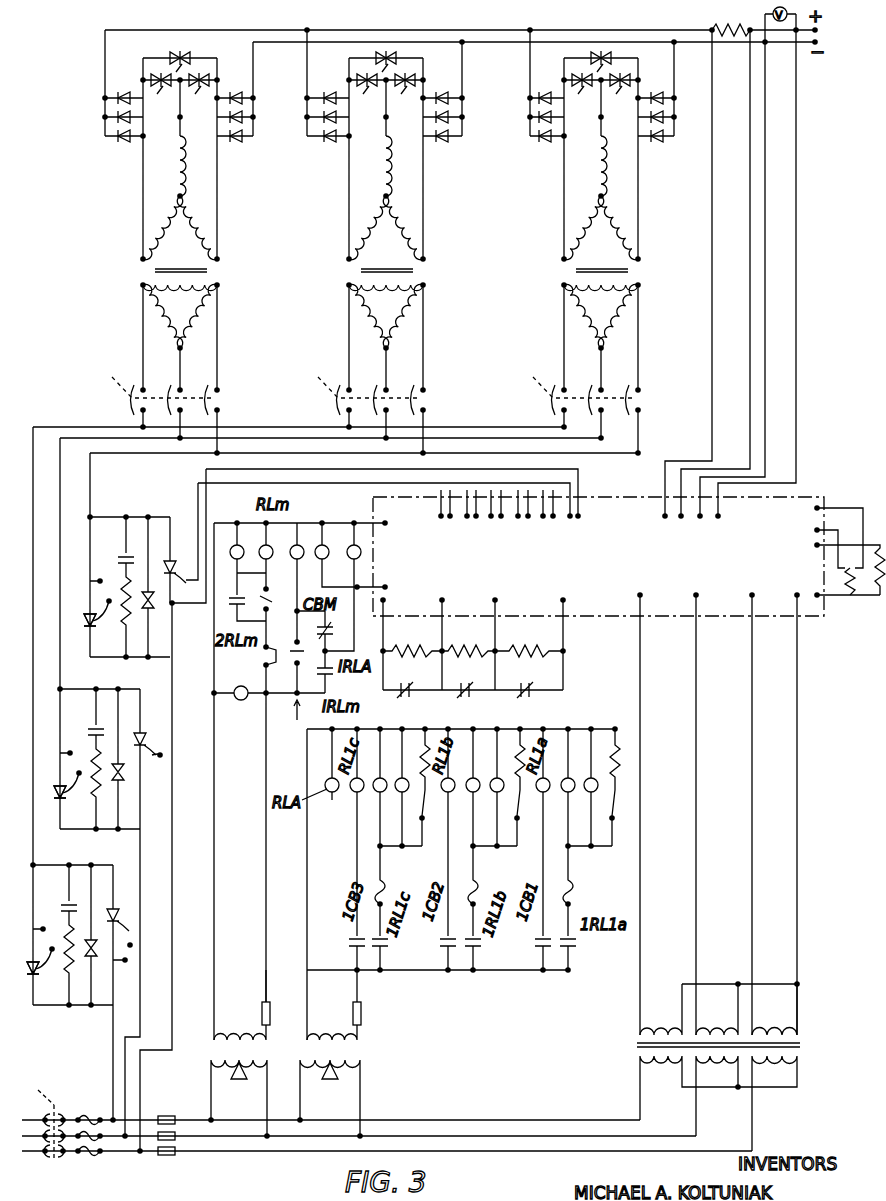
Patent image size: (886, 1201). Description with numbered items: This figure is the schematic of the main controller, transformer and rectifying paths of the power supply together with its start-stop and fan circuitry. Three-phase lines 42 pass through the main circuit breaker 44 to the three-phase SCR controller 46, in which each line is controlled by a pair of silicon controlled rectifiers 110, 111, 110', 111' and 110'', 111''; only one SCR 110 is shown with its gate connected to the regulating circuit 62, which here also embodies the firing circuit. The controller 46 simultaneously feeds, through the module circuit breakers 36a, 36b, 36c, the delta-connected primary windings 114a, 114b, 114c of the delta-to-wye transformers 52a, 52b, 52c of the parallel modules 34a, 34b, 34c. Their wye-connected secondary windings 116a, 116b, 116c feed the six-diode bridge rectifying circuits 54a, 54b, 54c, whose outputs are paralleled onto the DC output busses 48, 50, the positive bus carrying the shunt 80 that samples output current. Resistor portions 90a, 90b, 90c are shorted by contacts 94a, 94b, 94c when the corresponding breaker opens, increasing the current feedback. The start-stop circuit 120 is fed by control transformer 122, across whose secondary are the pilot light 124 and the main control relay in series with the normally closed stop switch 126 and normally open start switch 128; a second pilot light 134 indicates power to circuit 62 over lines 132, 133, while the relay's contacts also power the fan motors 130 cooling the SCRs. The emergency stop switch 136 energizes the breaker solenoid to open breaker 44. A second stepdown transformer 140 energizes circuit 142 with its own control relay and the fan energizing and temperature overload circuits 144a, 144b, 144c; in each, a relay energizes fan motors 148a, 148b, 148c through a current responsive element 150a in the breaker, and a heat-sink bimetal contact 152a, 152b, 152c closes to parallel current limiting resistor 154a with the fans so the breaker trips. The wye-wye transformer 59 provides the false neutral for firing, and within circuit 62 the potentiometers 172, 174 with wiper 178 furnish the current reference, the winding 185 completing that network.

The DC output bus 48 is at (577, 46).
The positive DC output bus 50 is at (664, 40).
The shunt 80 is at (722, 32).
The three-phase diode rectifying circuit 54a is at (652, 140).
The three-phase diode rectifying circuit 54b is at (442, 140).
The three-phase diode rectifying circuit 54c is at (236, 140).
The module 34a is at (555, 234).
The module 34b is at (334, 216).
The module 34c is at (117, 216).
The secondary winding 116a is at (626, 232).
The secondary winding 116b is at (411, 232).
The secondary winding 116c is at (205, 232).
The delta-to-wye transformer 52a is at (643, 275).
The delta-to-wye transformer 52b is at (428, 275).
The delta-to-wye transformer 52c is at (222, 275).
The primary winding 114a is at (621, 328).
The primary winding 114b is at (406, 328).
The primary winding 114c is at (200, 328).
The circuit breaker 36a is at (641, 404).
The circuit breaker 36b is at (426, 404).
The circuit breaker 36c is at (220, 404).
The silicon controlled rectifier 110 is at (145, 811).
The silicon controlled rectifier 111 is at (77, 614).
The silicon controlled rectifier 110' is at (146, 920).
The silicon controlled rectifier 111' is at (49, 785).
The silicon controlled rectifier 110'' is at (86, 992).
The silicon controlled rectifier 111'' is at (50, 982).
The three-phase SCR controller 46 is at (100, 856).
The pilot light 134 is at (228, 533).
The fan motors 130 is at (343, 535).
The start switch 128 is at (270, 600).
The emergency stop switch 136 is at (305, 650).
The stop switch 126 is at (262, 667).
The pilot light 124 is at (240, 700).
The start-stop circuit 120 is at (288, 723).
The input line 133 is at (414, 521).
The input line 132 is at (391, 595).
The voltage-current regulating circuit 62 is at (608, 562).
The potentiometer 174 is at (882, 545).
The wiper 178 is at (832, 586).
The winding 185 is at (872, 600).
The potentiometer 172 is at (832, 600).
The resistor portion 90a is at (529, 640).
The resistor portion 90b is at (468, 640).
The resistor portion 90c is at (394, 648).
The contact 94a is at (563, 696).
The contact 94b is at (484, 704).
The contact 94c is at (398, 702).
The fan energizing and temperature overload circuit 144a is at (617, 980).
The fan energizing and temperature overload circuit 144b is at (522, 980).
The fan energizing and temperature overload circuit 144c is at (420, 980).
The fan motors 148a is at (592, 826).
The fan motors 148b is at (489, 822).
The fan motors 148c is at (395, 822).
The bimetal contact 152a is at (623, 796).
The bimetal contact 152b is at (525, 794).
The bimetal contact 152c is at (433, 788).
The current limiting resistor 154a is at (641, 793).
The current responsive element 150a is at (574, 896).
The fan control circuit 142 is at (433, 984).
The control transformer 122 is at (210, 1052).
The stepdown control transformer 140 is at (362, 1050).
The wye-wye transformer 59 is at (797, 1003).
The three-phase lines 42 is at (25, 1118).
The main circuit breaker 44 is at (55, 1158).